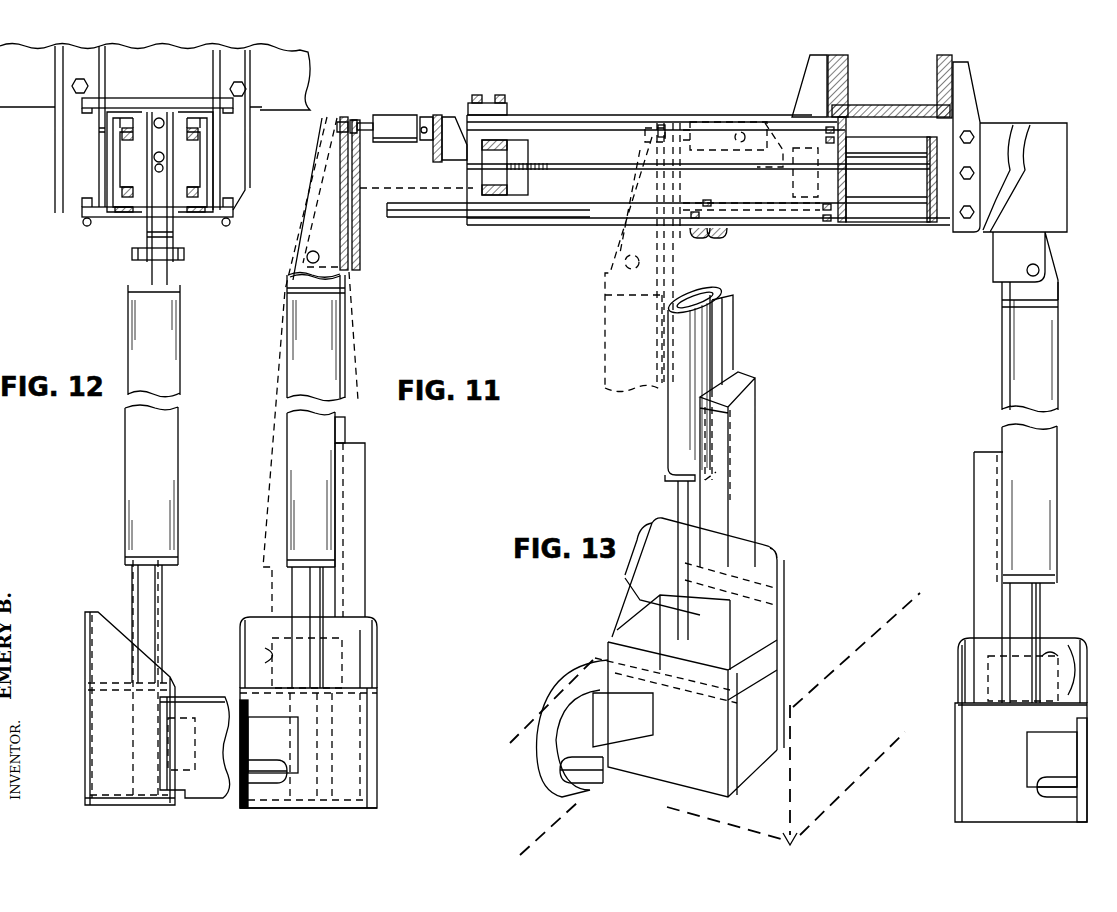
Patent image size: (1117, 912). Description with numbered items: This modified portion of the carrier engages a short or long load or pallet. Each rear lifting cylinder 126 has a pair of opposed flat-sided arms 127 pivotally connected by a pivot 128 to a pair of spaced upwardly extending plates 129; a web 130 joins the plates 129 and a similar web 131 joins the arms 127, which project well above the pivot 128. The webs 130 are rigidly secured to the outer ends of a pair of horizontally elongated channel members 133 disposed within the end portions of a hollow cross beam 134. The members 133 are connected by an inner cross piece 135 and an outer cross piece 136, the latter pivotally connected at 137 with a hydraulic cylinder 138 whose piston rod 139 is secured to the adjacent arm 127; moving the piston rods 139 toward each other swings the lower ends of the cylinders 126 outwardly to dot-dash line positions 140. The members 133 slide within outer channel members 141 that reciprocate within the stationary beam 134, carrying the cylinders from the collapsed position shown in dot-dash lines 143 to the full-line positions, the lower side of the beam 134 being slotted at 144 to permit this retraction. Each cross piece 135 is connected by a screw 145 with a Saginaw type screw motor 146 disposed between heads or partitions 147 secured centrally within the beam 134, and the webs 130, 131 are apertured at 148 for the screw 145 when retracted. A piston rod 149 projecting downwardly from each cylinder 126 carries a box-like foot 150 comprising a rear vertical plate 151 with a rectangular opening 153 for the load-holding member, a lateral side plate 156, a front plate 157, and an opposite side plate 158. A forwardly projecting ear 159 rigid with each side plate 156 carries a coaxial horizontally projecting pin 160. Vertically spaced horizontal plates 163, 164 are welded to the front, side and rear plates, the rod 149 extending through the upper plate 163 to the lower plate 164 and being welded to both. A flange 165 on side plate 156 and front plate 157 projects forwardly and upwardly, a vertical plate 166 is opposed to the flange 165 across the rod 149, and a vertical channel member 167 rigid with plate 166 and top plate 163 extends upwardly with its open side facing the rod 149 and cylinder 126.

In FIG. 11, the rear lifting cylinder 126 is at (320, 495).
In FIG. 13, the rear lifting cylinder 126 is at (675, 430).
In FIG. 12, the opposed flat-sided arms 127 is at (152, 280).
In FIG. 11, the opposed flat-sided arms 127 is at (320, 223).
In FIG. 12, the pivot 128 is at (132, 253).
In FIG. 11, the pivot 128 is at (306, 258).
In FIG. 12, the upwardly extending plates 129 is at (150, 246).
In FIG. 11, the upwardly extending plates 129 is at (333, 190).
In FIG. 11, the web 130 is at (361, 241).
In FIG. 11, the web 131 is at (340, 236).
In FIG. 12, the channel members 133 is at (198, 130).
In FIG. 12, the hollow cross beam 134 is at (196, 112).
In FIG. 11, the hollow cross beam 134 is at (680, 118).
In FIG. 11, the inner cross piece 135 is at (503, 196).
In FIG. 11, the outer cross piece 136 is at (443, 153).
In FIG. 11, the pivotal connection 137 is at (430, 118).
In FIG. 11, the hydraulic cylinder 138 is at (395, 120).
In FIG. 11, the piston rod 139 is at (358, 124).
In FIG. 11, the dot-dash line positions 140 is at (265, 520).
In FIG. 12, the outer channel members 141 is at (113, 160).
In FIG. 11, the collapsed position 143 is at (606, 335).
In FIG. 11, the slot 144 is at (580, 215).
In FIG. 11, the screw 145 is at (576, 165).
In FIG. 11, the Saginaw type screw motor 146 is at (893, 192).
In FIG. 11, the heads or partitions 147 is at (935, 140).
In FIG. 11, the apertures 148 is at (350, 175).
In FIG. 12, the piston rod 149 is at (150, 590).
In FIG. 11, the piston rod 149 is at (312, 591).
In FIG. 13, the piston rod 149 is at (688, 497).
In FIG. 12, the box-like foot 150 is at (84, 610).
In FIG. 11, the box-like foot 150 is at (392, 666).
In FIG. 13, the box-like foot 150 is at (598, 613).
In FIG. 12, the rear vertical plate 151 is at (87, 702).
In FIG. 11, the rear vertical plate 151 is at (270, 630).
In FIG. 13, the rear vertical plate 151 is at (782, 605).
In FIG. 11, the rectangular opening 153 is at (272, 655).
In FIG. 13, the rectangular opening 153 is at (762, 550).
In FIG. 12, the lateral side plate 156 is at (103, 742).
In FIG. 11, the front plate 157 is at (355, 737).
In FIG. 13, the front plate 157 is at (700, 772).
In FIG. 13, the side plate 158 is at (760, 720).
In FIG. 12, the forwardly projecting ear 159 is at (207, 792).
In FIG. 11, the forwardly projecting ear 159 is at (249, 744).
In FIG. 13, the forwardly projecting ear 159 is at (568, 735).
In FIG. 11, the pins 160 is at (347, 427).
In FIG. 13, the pins 160 is at (728, 333).
In FIG. 13, the upper horizontal plate 163 is at (648, 617).
In FIG. 11, the lower horizontal plate 164 is at (340, 810).
In FIG. 13, the lower horizontal plate 164 is at (760, 763).
In FIG. 12, the flange 165 is at (103, 652).
In FIG. 11, the flange 165 is at (262, 658).
In FIG. 13, the flange 165 is at (650, 556).
In FIG. 11, the vertical plate 166 is at (368, 640).
In FIG. 13, the vertical plate 166 is at (782, 572).
In FIG. 11, the channel member 167 is at (357, 472).
In FIG. 13, the channel member 167 is at (758, 432).